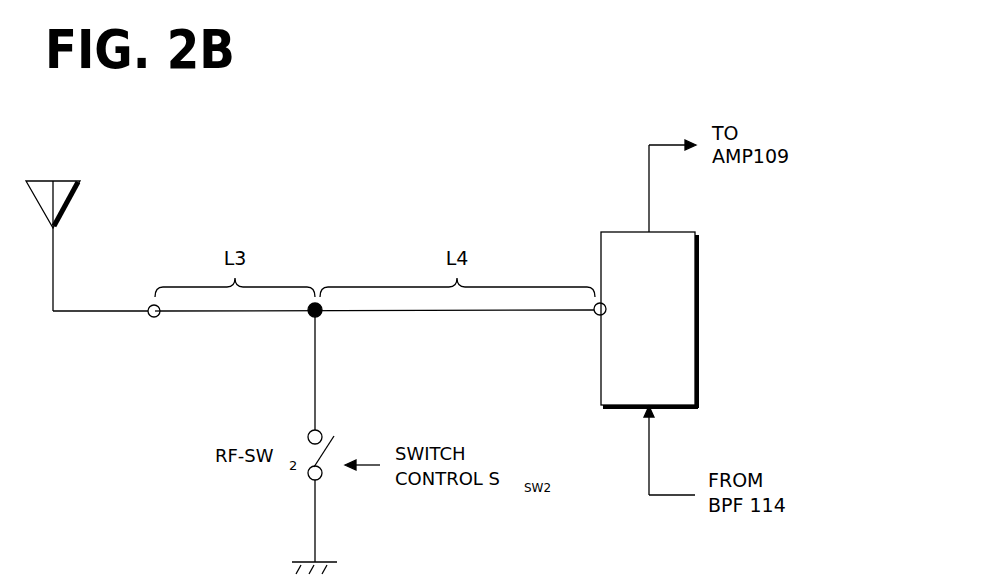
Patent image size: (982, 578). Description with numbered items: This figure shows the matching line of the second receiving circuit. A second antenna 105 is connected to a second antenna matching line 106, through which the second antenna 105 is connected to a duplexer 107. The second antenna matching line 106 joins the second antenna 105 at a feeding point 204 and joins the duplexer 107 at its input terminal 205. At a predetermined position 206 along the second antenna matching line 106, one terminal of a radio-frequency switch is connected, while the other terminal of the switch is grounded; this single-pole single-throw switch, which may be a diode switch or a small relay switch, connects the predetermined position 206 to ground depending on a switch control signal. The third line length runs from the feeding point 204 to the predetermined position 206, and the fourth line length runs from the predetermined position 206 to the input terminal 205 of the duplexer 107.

The second antenna 105 is at (80, 197).
The second antenna matching line 106 is at (449, 206).
The duplexer 107 is at (697, 318).
The feeding point 204 is at (160, 315).
The input terminal 205 is at (598, 315).
The predetermined position 206 is at (320, 314).